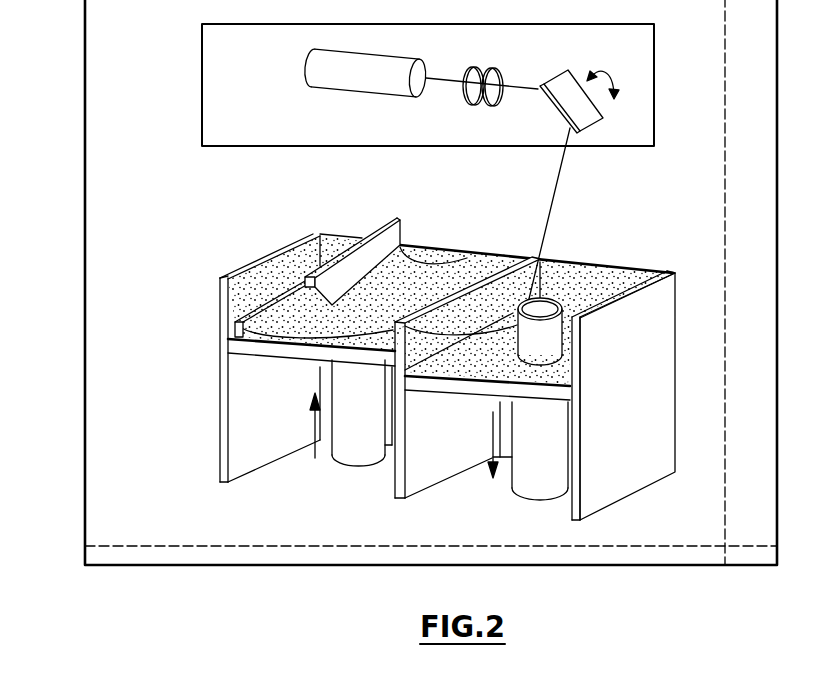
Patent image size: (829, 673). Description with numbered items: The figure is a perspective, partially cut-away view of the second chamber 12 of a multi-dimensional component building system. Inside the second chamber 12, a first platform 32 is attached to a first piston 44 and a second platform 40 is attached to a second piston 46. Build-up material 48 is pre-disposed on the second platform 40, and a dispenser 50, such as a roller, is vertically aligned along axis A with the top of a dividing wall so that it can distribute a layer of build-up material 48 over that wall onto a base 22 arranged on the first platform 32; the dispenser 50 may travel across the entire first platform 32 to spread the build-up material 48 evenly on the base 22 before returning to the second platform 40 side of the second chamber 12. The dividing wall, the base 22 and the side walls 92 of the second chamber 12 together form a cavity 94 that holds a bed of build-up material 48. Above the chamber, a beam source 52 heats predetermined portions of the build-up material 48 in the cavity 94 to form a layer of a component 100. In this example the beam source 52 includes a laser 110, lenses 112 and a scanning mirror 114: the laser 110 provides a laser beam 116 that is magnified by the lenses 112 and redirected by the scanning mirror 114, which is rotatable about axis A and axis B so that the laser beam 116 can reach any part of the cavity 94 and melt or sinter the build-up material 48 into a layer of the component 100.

The second chamber 12 is at (86, 333).
The base 22 is at (538, 388).
The first platform 32 is at (458, 392).
The second platform 40 is at (246, 350).
The first piston 44 is at (343, 445).
The second piston 46 is at (512, 478).
The build-up material 48 is at (240, 307).
The dispenser 50 is at (310, 270).
The beam source 52 is at (655, 70).
The side walls 92 is at (660, 303).
The cavity 94 is at (563, 357).
The component 100 is at (560, 270).
The laser 110 is at (318, 95).
The lenses 112 is at (500, 72).
The scanning mirror 114 is at (592, 133).
The laser beam 116 is at (438, 76).
The axis A is at (727, 452).
The axis B is at (648, 545).